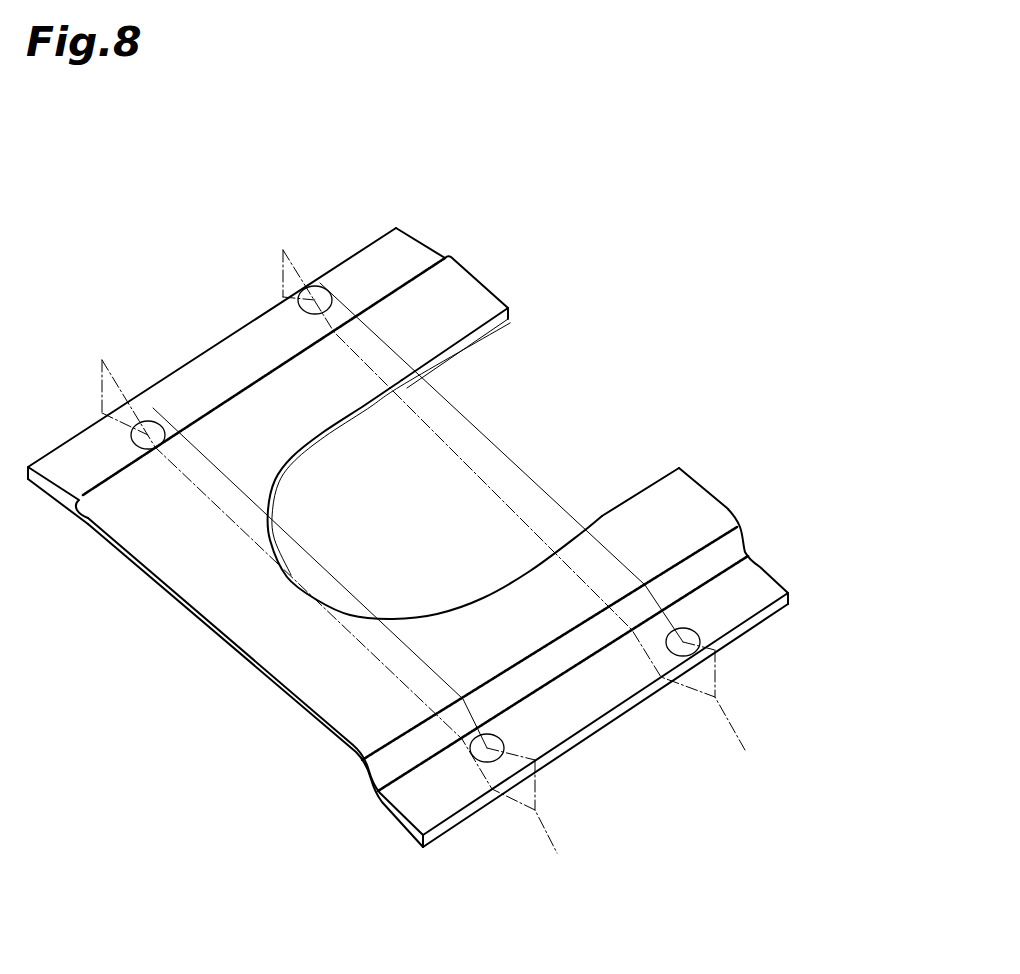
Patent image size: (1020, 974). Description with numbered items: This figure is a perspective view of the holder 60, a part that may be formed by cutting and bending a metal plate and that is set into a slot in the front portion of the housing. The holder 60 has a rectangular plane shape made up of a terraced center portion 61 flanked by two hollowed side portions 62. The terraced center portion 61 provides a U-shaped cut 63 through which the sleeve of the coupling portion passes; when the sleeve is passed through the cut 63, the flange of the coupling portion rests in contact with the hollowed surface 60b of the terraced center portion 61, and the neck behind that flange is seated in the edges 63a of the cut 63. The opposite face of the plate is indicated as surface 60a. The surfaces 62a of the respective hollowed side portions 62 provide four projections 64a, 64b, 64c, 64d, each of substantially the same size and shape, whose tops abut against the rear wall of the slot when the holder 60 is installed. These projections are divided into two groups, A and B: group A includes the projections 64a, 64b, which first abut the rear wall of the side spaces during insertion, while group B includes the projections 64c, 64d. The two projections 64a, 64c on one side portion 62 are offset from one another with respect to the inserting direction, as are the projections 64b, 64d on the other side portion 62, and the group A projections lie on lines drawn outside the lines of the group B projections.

The holder 60 is at (471, 173).
The upper surface 60a is at (470, 297).
The hollowed surface 60b is at (267, 677).
The terraced center portion 61 is at (680, 493).
The hollowed side portion 62 is at (217, 361).
The surface of hollowed side portion 62a is at (373, 260).
The U-shaped cut 63 is at (370, 525).
The edges of the cut 63a is at (460, 352).
The projection 64a is at (315, 293).
The projection 64b is at (683, 648).
The projection 64c is at (148, 433).
The projection 64d is at (493, 758).
The group A is at (745, 750).
The group B is at (557, 853).